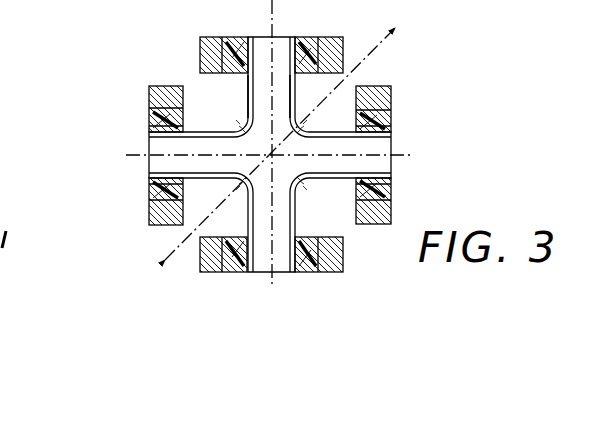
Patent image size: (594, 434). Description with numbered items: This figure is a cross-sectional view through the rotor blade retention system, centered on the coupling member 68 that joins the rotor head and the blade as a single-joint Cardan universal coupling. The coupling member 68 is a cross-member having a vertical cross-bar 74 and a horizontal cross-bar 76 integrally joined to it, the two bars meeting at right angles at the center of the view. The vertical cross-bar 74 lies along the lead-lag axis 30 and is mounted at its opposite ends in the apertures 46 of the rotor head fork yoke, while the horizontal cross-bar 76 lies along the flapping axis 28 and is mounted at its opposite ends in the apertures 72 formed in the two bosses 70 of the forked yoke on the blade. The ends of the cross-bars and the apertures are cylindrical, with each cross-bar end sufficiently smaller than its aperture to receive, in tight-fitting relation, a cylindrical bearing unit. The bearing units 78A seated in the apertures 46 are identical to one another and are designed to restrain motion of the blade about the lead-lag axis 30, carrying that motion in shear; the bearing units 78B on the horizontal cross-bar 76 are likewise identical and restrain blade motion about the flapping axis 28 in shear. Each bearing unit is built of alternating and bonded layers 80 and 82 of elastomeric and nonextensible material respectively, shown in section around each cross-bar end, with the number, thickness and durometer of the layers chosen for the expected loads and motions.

The flapping axis 28 is at (410, 155).
The lead-lag axis 30 is at (276, 13).
The apertures 46 is at (309, 40).
The coupling member 68 is at (244, 113).
The bosses 70 is at (163, 86).
The apertures 72 is at (148, 109).
The vertical cross-bar 74 is at (278, 95).
The horizontal cross-bar 76 is at (340, 168).
The bearing units 78A is at (234, 33).
The bearing units 78B is at (146, 193).
The layers of elastomeric material 80 is at (227, 62).
The layers of nonextensible material 82 is at (200, 39).